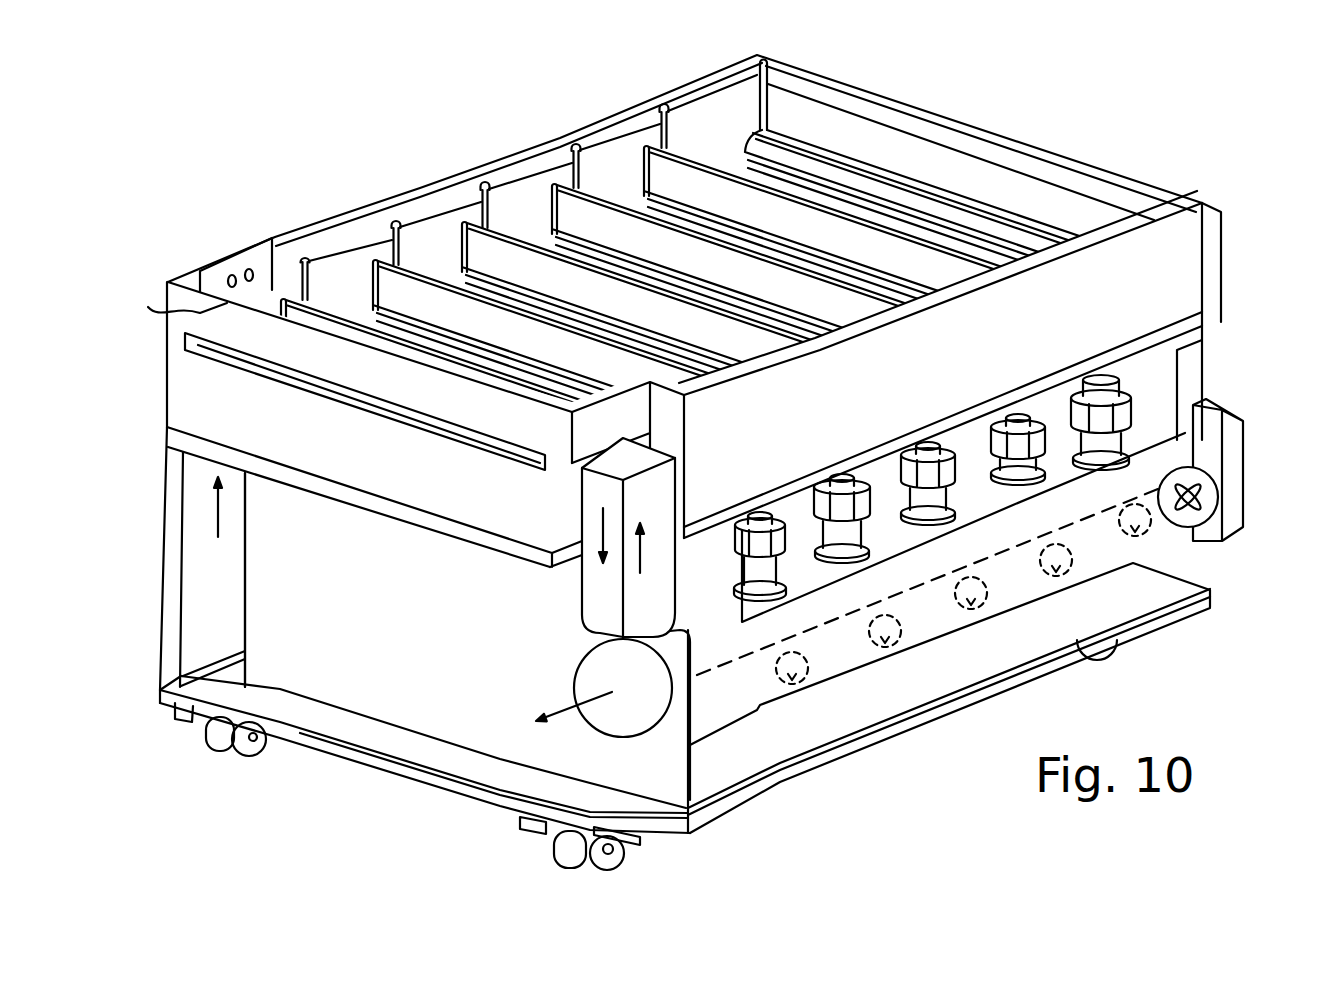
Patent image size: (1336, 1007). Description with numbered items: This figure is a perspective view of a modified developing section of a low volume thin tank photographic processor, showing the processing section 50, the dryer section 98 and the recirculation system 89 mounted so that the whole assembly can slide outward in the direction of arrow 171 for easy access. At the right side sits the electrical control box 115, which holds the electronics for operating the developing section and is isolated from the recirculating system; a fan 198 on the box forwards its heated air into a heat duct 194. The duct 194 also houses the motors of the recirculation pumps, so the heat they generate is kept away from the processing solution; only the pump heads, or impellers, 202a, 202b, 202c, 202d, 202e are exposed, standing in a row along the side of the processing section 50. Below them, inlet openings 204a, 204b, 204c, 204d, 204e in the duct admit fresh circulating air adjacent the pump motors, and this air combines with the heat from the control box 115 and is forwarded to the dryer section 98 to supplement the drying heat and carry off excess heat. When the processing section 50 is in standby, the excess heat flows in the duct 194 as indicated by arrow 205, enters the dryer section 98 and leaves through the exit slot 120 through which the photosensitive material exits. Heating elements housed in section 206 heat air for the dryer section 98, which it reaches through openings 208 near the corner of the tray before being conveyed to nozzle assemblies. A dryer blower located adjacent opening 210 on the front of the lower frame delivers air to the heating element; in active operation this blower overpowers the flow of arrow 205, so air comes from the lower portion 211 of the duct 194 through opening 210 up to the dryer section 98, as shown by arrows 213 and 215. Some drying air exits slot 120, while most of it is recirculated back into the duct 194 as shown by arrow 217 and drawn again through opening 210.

The processing section 50 is at (850, 417).
The recirculation system 89 is at (1222, 351).
The dryer section 98 is at (470, 481).
The electrical control box 115 is at (1227, 422).
The exit slot 120 is at (297, 383).
The arrow 171 is at (397, 648).
The heat duct 194 is at (672, 622).
The fan 198 is at (1217, 483).
The pump head 202a is at (1200, 371).
The pump head 202b is at (1012, 467).
The pump head 202c is at (920, 503).
The pump head 202d is at (838, 537).
The pump head 202e is at (770, 532).
The inlet opening 204a is at (1150, 535).
The inlet opening 204b is at (1053, 577).
The inlet opening 204c is at (975, 610).
The inlet opening 204d is at (885, 648).
The inlet opening 204e is at (790, 686).
The arrow 205 is at (643, 562).
The section 206 is at (358, 617).
The openings 208 is at (248, 268).
The opening 210 is at (580, 663).
The lower portion 211 is at (745, 661).
The arrow 213 is at (580, 700).
The arrow 215 is at (162, 317).
The arrow 217 is at (624, 500).